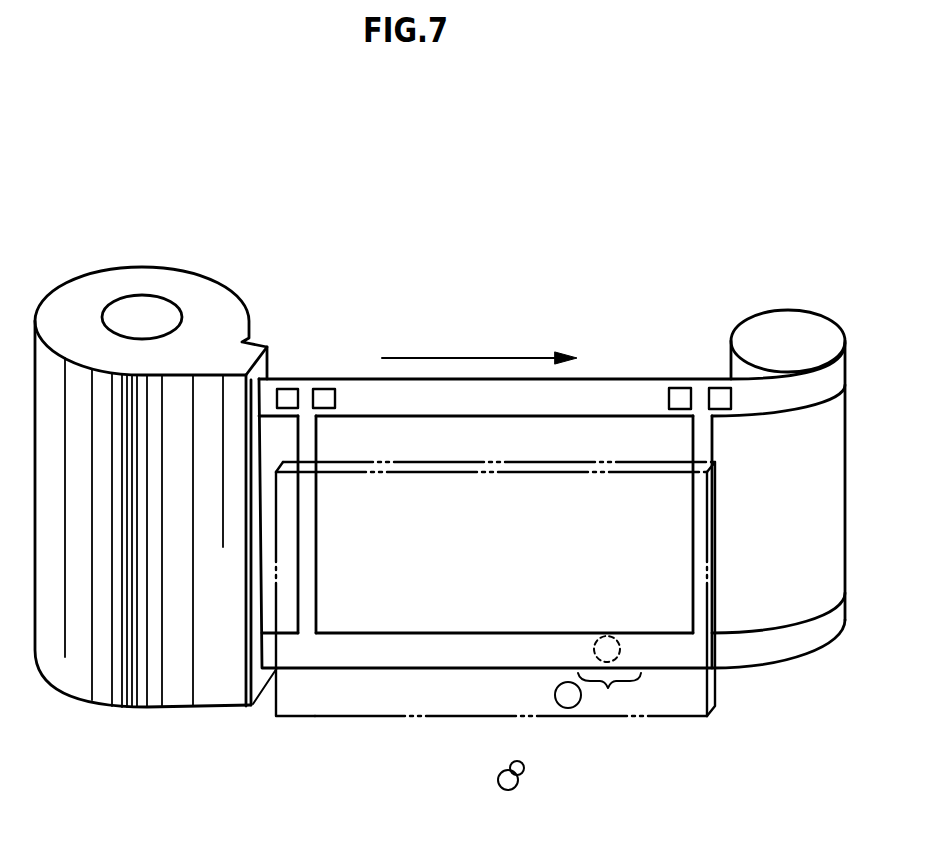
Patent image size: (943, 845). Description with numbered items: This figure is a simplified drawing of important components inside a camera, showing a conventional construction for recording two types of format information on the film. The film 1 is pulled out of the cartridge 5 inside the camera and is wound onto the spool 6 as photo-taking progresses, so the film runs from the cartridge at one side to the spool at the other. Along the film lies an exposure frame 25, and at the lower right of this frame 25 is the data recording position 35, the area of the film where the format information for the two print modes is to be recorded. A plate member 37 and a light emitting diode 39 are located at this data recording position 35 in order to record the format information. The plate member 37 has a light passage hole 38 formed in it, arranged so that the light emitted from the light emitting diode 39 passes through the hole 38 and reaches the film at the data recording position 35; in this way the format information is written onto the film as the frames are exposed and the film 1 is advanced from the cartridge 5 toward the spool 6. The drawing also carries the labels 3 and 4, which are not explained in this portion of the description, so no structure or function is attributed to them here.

The film 1 is at (630, 395).
The magnetic head position mark 3 is at (613, 640).
The perforations 4 is at (322, 395).
The cartridge 5 is at (205, 294).
The spool 6 is at (805, 333).
The frame 25 is at (493, 430).
The data recording position 35 is at (608, 688).
The plate member 37 is at (320, 705).
The light passage hole 38 is at (555, 695).
The light emitting diode (LED) 39 is at (525, 770).